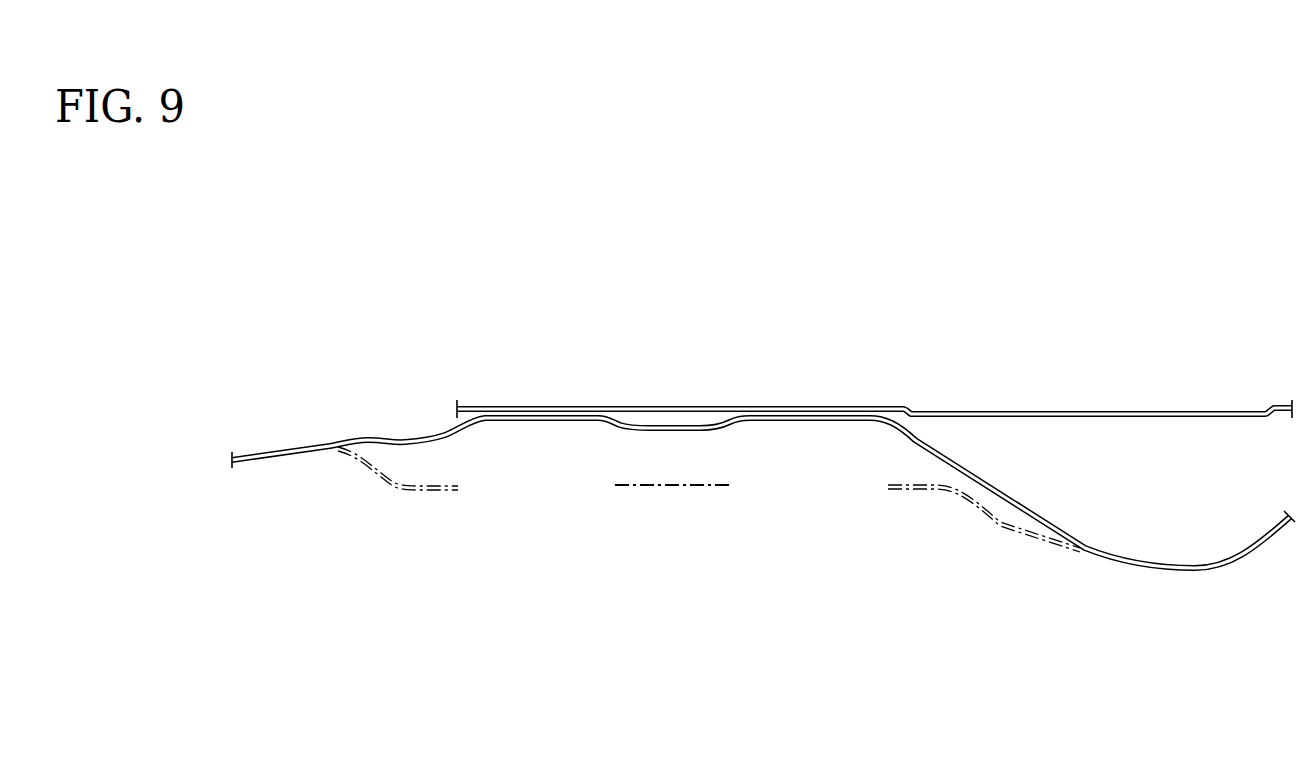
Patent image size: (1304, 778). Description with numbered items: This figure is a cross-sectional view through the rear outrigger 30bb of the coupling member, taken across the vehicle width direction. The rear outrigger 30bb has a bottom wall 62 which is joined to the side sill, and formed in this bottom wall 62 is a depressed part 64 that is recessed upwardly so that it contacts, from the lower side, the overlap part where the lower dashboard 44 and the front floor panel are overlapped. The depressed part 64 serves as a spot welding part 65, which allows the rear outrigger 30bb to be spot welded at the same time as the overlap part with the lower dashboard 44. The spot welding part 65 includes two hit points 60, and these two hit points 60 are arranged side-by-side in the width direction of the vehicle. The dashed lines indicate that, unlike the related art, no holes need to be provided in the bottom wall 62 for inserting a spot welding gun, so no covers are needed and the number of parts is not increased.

The lower dashboard 44 is at (1063, 413).
The rear outrigger 30bb is at (280, 458).
The hit point 60 is at (530, 420).
The spot welding part 65 is at (759, 430).
The depressed part 64 is at (835, 485).
The bottom wall 62 is at (1092, 553).